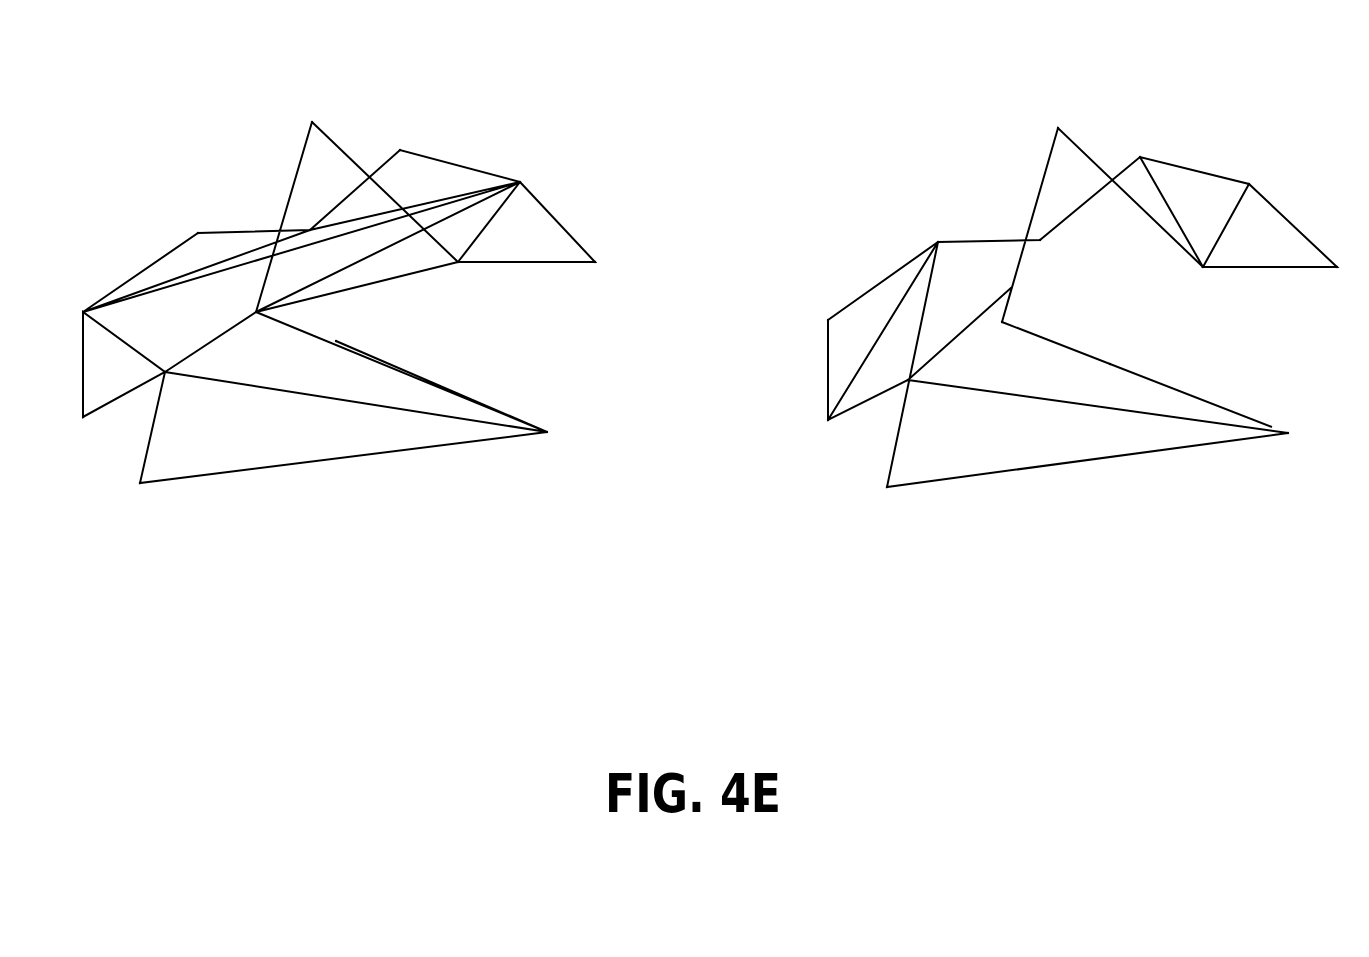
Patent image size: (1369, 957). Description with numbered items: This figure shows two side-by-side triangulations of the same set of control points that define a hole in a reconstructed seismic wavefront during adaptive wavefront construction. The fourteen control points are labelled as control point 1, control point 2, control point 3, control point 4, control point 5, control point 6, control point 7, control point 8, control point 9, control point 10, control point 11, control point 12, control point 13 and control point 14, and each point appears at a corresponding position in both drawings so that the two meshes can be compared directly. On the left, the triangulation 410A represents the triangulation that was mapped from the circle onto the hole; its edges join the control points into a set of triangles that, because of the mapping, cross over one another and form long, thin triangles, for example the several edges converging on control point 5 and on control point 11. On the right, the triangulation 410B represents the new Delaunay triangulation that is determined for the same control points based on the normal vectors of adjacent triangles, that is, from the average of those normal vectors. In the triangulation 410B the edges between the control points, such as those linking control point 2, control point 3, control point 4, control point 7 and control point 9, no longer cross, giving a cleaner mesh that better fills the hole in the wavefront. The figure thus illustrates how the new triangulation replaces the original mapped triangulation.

The triangulation 410A is at (339, 362).
The triangulation 410B is at (1082, 355).
The control point 1 is at (434, 307).
The control point 2 is at (570, 207).
The control point 3 is at (680, 238).
The control point 4 is at (774, 143).
The control point 5 is at (885, 175).
The control point 6 is at (977, 271).
The control point 7 is at (821, 298).
The control point 8 is at (680, 97).
The control point 9 is at (655, 316).
The control point 10 is at (752, 364).
The control point 11 is at (947, 427).
The control point 12 is at (512, 488).
The control point 13 is at (571, 380).
The control point 14 is at (450, 426).